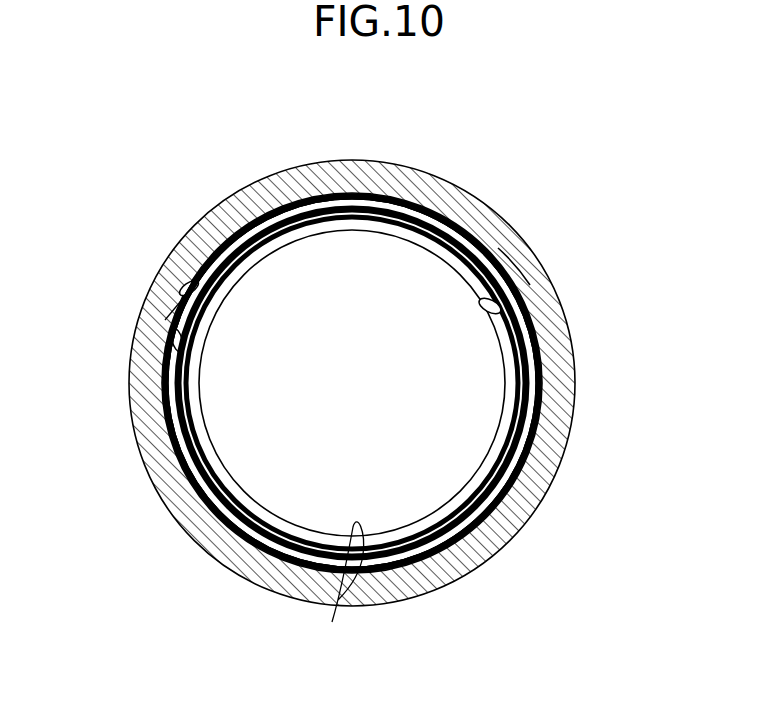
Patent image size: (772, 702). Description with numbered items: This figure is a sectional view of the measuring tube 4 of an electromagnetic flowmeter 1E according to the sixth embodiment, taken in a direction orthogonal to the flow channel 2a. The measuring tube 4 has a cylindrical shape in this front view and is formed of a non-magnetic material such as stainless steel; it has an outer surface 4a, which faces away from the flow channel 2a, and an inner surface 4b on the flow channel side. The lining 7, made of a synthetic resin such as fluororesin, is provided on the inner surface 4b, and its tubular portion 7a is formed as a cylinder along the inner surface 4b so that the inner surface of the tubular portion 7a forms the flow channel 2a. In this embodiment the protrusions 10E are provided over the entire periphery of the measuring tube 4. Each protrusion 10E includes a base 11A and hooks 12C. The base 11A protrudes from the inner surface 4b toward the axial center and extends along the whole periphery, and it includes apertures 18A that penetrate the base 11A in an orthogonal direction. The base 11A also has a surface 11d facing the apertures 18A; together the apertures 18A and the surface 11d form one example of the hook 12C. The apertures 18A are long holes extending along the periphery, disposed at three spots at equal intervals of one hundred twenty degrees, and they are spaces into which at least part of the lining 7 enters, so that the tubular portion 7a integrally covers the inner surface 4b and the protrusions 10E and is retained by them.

The electromagnetic flowmeter 1E is at (388, 365).
The measuring tube 4 is at (336, 364).
The outer surface 4a is at (285, 173).
The inner surface 4b is at (180, 284).
The protrusion 10E is at (530, 268).
The base 11A is at (490, 303).
The hook 12C is at (379, 200).
The aperture 18A is at (352, 345).
The surface 11d is at (352, 345).
The lining 7 is at (352, 430).
The tubular portion 7a is at (335, 587).
The flow channel 2a is at (418, 480).